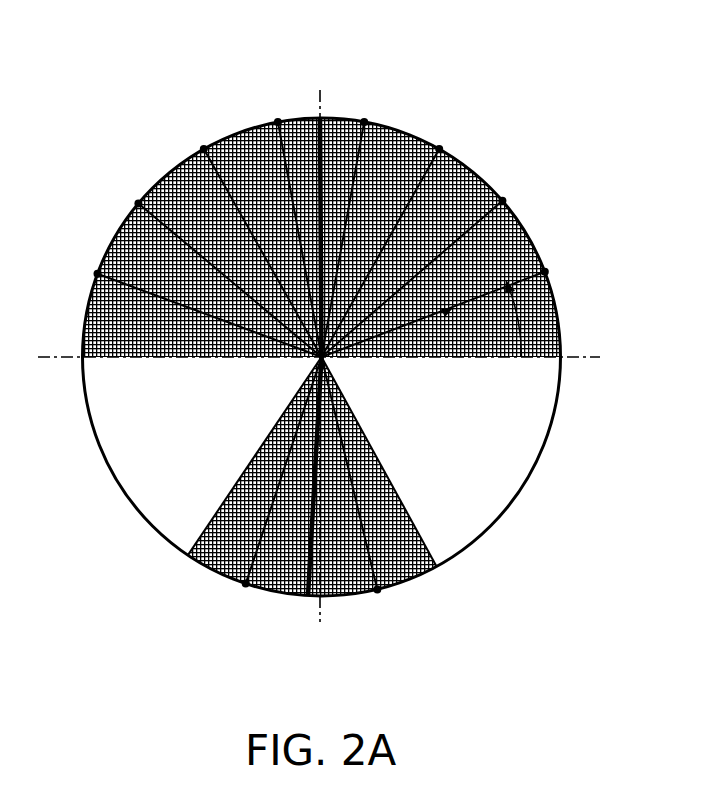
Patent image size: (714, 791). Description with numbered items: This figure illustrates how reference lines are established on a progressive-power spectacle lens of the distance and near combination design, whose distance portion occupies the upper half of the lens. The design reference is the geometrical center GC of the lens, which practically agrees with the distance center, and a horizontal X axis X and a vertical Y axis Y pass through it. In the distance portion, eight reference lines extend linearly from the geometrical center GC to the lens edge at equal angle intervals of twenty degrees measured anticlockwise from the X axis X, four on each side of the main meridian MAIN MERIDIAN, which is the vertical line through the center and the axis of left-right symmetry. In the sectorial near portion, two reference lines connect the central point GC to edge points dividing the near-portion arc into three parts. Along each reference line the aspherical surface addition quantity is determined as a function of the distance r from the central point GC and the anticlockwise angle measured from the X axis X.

The geometrical center GC is at (319, 352).
The distance r is at (446, 325).
The X axis X is at (329, 357).
The Y axis Y is at (320, 342).
The main meridian MAIN MERIDIAN is at (299, 566).